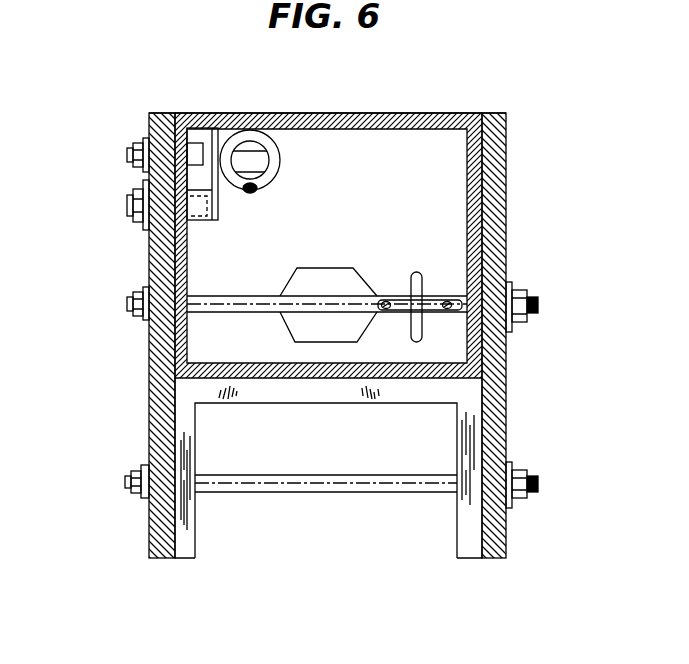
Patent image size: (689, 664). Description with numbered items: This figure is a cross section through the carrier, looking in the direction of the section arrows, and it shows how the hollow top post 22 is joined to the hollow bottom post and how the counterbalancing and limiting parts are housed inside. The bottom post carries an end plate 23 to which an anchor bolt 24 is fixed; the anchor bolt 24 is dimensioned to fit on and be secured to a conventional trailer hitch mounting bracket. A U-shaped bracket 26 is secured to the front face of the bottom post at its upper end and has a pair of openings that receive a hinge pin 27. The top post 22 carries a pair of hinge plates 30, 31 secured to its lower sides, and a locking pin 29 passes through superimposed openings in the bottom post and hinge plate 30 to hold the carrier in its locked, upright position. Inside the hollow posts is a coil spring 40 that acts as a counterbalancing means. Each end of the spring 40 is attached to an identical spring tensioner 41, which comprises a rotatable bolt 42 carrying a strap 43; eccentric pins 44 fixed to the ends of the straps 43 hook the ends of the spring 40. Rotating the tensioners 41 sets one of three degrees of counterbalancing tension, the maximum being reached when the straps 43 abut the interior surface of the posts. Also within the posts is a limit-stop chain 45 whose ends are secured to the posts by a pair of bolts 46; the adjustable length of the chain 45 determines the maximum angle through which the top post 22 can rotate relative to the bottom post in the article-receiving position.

The top post 22 is at (462, 113).
The end plate 23 is at (431, 212).
The anchor bolt 24 is at (355, 278).
The U-shaped bracket 26 is at (466, 513).
The hinge pin 27 is at (297, 495).
The locking pin 29 is at (127, 157).
The hinge plate 30 is at (152, 375).
The hinge plate 31 is at (500, 363).
The coil spring 40 is at (258, 190).
The spring tensioner 41 is at (127, 207).
The rotatable bolt 42 is at (200, 221).
The strap 43 is at (218, 212).
The eccentric pin 44 is at (280, 168).
The limit-stop chain 45 is at (420, 274).
The bolt 46 is at (127, 302).